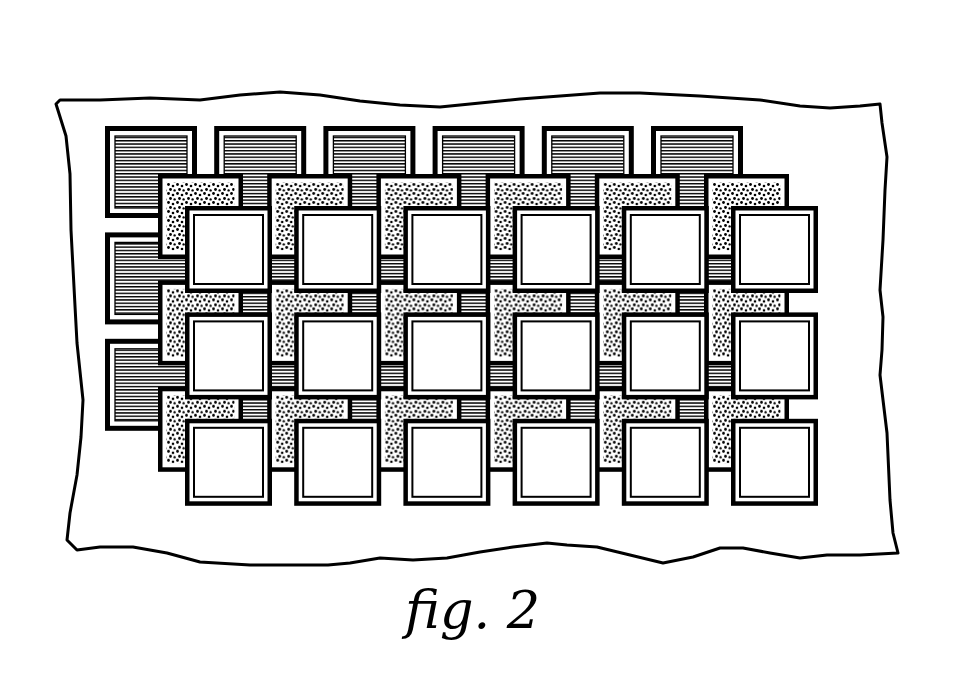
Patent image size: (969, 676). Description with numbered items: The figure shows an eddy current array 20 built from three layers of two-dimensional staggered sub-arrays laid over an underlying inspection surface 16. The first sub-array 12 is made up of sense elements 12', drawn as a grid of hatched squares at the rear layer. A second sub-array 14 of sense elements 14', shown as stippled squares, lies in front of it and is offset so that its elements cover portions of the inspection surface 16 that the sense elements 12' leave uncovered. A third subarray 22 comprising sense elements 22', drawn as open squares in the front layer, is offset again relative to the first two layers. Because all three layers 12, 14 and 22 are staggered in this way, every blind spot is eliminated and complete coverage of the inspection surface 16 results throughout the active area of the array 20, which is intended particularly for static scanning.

The sub-array 12 is at (113, 449).
The sense elements 12' is at (205, 127).
The sub-array 14 is at (161, 498).
The sense elements 14' is at (364, 147).
The inspection surface 16 is at (854, 157).
The eddy current array 20 is at (608, 120).
The third subarray 22 is at (255, 541).
The sense elements 22' is at (651, 515).